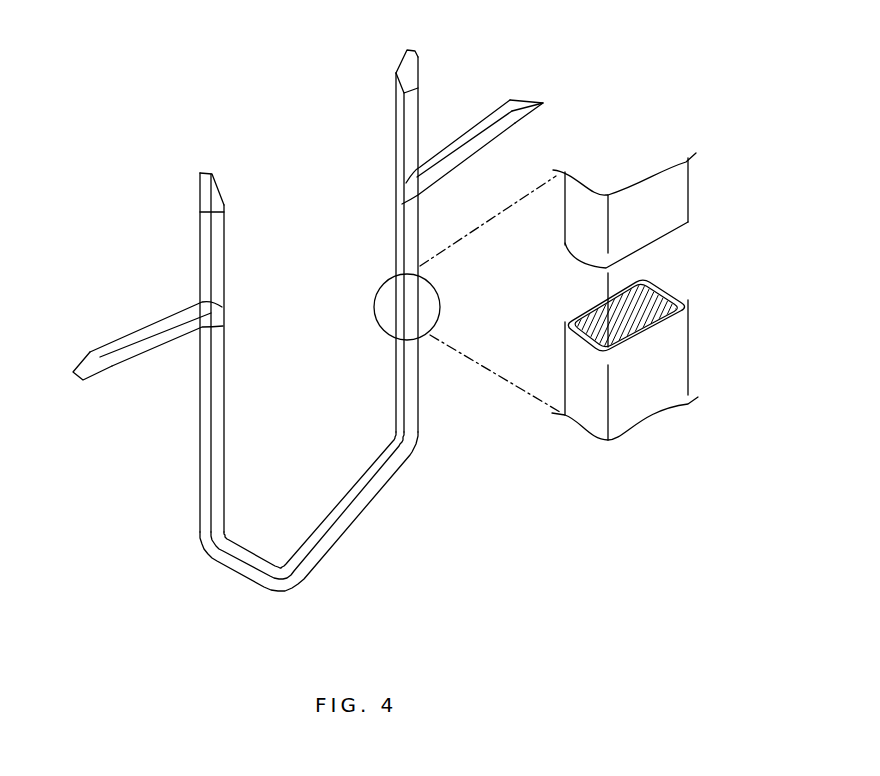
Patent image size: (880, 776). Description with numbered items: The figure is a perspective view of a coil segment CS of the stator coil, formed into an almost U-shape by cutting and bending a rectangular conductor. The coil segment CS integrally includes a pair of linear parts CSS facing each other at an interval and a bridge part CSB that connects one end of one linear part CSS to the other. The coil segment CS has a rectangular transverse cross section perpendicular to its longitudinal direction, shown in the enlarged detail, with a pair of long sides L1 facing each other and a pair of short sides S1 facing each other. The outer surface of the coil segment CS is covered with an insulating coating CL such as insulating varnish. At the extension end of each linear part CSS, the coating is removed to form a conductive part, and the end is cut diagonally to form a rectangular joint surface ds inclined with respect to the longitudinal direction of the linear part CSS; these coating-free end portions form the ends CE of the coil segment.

The coil segment CS is at (185, 90).
The linear part CSS is at (372, 62).
The bridge part CSB is at (355, 523).
The coil end portion CE is at (160, 340).
The joint surface ds is at (218, 172).
The insulating coating CL is at (413, 385).
The short side S1 is at (575, 347).
The long side L1 is at (588, 297).